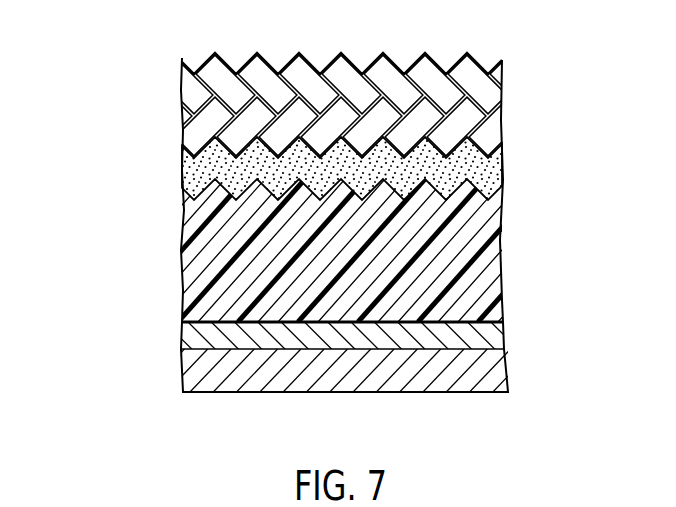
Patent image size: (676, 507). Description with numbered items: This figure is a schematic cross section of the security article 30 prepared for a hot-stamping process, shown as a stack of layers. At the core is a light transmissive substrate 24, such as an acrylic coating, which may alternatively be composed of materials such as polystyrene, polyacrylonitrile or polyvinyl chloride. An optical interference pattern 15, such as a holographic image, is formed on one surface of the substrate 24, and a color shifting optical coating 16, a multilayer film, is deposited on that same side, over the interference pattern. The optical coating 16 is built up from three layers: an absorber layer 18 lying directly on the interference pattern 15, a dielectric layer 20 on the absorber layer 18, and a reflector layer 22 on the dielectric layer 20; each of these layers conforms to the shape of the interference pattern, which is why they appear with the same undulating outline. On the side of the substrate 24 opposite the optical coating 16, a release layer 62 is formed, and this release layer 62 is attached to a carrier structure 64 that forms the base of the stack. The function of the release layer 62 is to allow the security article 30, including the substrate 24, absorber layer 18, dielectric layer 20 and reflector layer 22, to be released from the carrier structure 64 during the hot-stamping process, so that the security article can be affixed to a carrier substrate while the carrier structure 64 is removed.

The optical interference pattern 15 is at (368, 62).
The color shifting optical coating 16 is at (350, 127).
The absorber layer 18 is at (181, 173).
The dielectric layer 20 is at (181, 131).
The reflector layer 22 is at (181, 85).
The light transmissive substrate 24 is at (506, 243).
The security article 30 is at (176, 282).
The release layer 62 is at (181, 340).
The carrier structure 64 is at (181, 383).